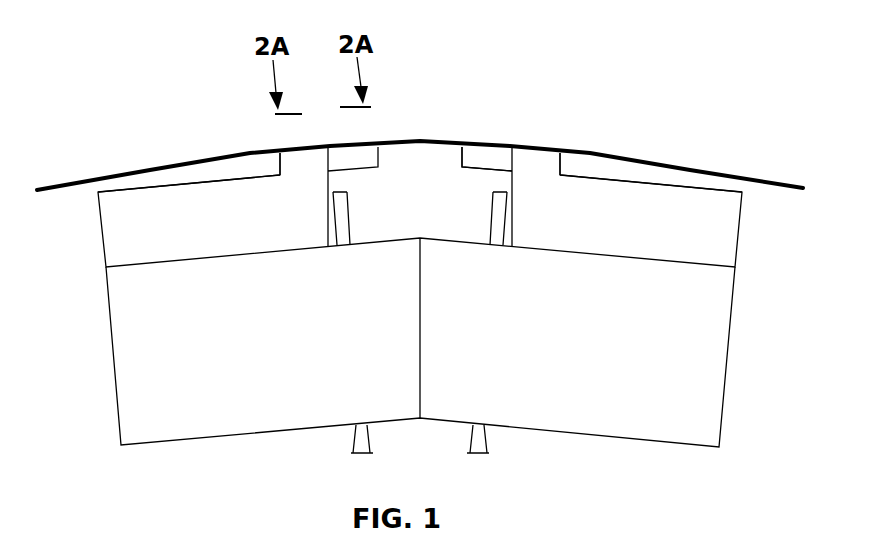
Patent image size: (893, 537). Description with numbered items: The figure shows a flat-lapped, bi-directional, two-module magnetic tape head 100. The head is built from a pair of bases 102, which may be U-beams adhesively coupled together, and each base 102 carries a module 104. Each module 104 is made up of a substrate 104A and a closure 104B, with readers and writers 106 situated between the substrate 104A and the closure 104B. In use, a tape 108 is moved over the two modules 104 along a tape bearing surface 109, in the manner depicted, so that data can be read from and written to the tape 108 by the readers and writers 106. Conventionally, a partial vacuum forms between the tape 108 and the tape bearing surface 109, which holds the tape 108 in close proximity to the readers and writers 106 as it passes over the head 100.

The magnetic tape head 100 is at (205, 110).
The base 102 is at (110, 333).
The module 104 is at (100, 236).
The substrate 104A is at (162, 212).
The closure 104B is at (458, 161).
The readers and writers 106 is at (515, 130).
The tape 108 is at (738, 178).
The tape bearing surface 109 is at (291, 141).